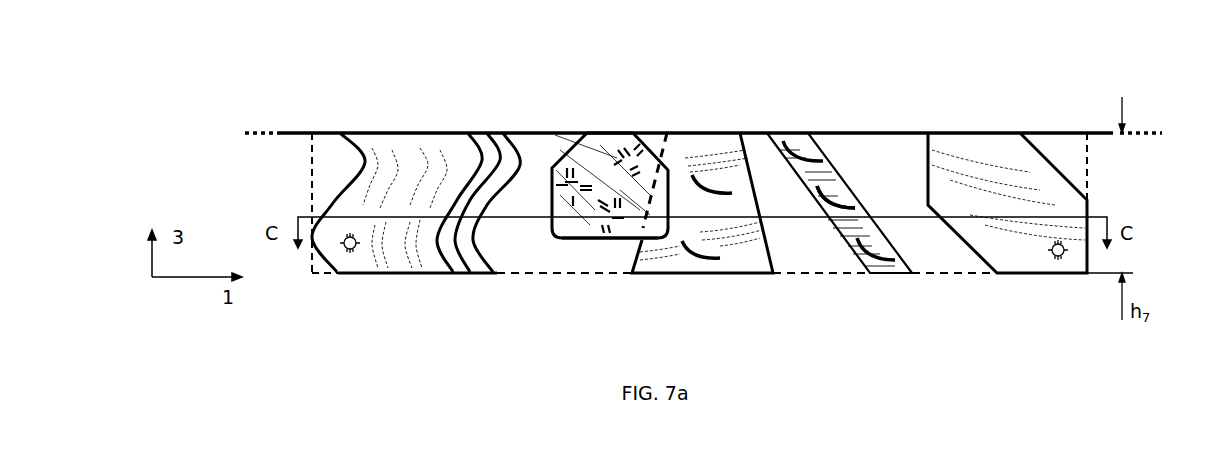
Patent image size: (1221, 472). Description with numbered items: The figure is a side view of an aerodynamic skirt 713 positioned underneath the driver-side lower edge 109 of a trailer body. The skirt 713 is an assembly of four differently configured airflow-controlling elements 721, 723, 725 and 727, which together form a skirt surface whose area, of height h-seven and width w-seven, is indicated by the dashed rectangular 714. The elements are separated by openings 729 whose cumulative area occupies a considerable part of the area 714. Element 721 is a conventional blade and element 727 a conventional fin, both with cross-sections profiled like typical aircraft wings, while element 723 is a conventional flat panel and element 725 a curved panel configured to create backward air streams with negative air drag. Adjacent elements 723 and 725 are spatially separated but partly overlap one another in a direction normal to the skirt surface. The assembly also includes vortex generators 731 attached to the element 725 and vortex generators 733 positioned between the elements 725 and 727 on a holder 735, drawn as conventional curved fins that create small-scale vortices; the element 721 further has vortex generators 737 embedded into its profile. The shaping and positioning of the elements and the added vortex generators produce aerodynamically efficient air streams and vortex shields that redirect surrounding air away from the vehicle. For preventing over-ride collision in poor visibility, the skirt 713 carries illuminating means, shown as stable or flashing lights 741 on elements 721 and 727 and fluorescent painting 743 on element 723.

The driver-side lower edge 109 is at (303, 131).
The aerodynamic skirt 713 is at (256, 174).
The dashed rectangular 714 is at (1090, 152).
The airflow-controlling element 721 is at (403, 152).
The airflow-controlling element 723 is at (563, 152).
The airflow-controlling element 725 is at (697, 143).
The airflow-controlling element 727 is at (992, 150).
The openings 729 is at (650, 142).
The vortex generators 731 is at (693, 260).
The vortex generators 733 is at (883, 268).
The holder 735 is at (827, 177).
The vortex generators 737 is at (443, 273).
The lights 741 is at (346, 250).
The fluorescent painting 743 is at (613, 240).